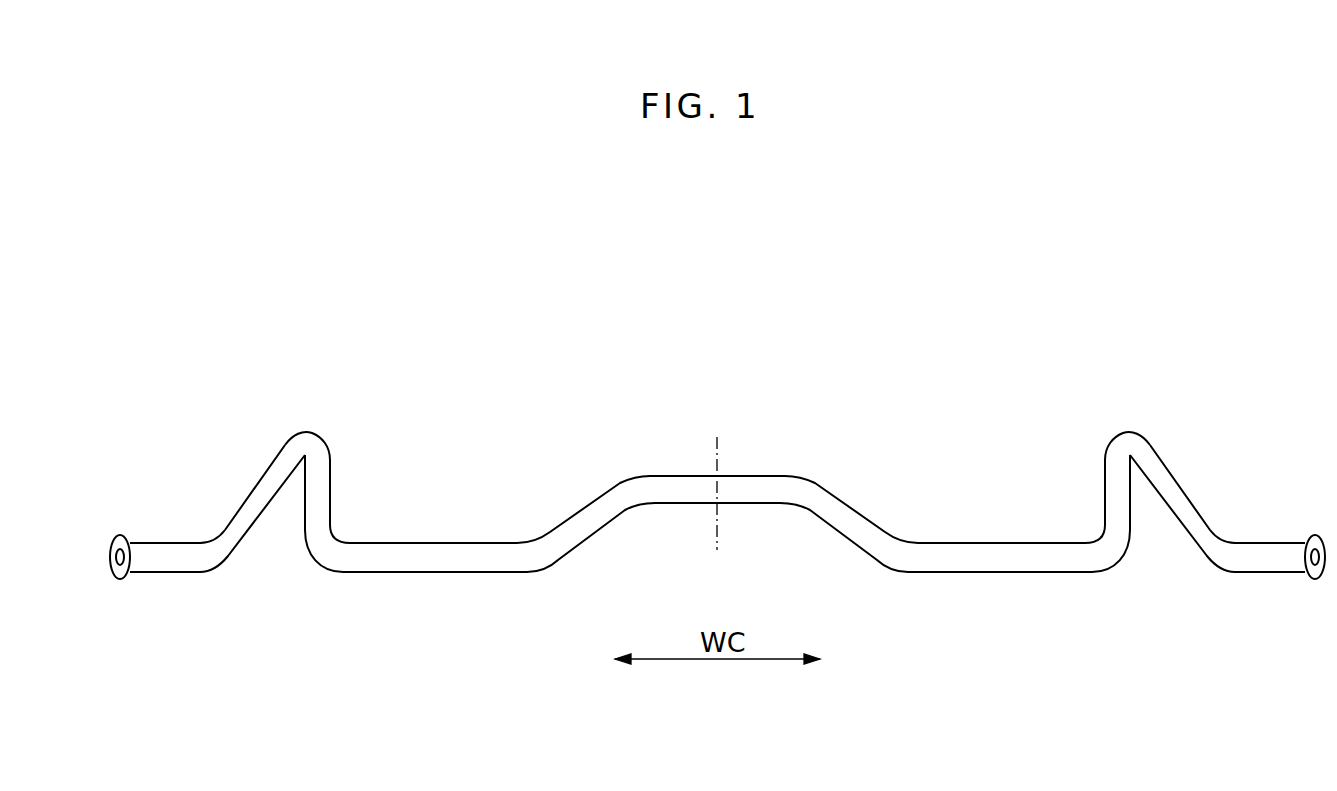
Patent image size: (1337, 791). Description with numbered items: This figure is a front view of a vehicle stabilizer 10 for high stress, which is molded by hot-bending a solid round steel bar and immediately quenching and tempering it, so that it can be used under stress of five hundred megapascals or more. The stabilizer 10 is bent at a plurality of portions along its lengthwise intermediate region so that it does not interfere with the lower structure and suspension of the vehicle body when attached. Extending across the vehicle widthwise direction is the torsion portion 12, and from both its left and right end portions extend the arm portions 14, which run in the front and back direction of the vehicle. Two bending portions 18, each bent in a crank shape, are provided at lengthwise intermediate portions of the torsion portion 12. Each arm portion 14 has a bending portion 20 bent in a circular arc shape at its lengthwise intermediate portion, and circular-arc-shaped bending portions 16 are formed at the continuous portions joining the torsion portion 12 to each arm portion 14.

The stabilizer 10 is at (882, 355).
The torsion portion 12 is at (738, 485).
The arm portion 14 is at (270, 472).
The bending portion 16 is at (333, 557).
The bending portion 18 is at (580, 537).
The bending portion 20 is at (315, 442).